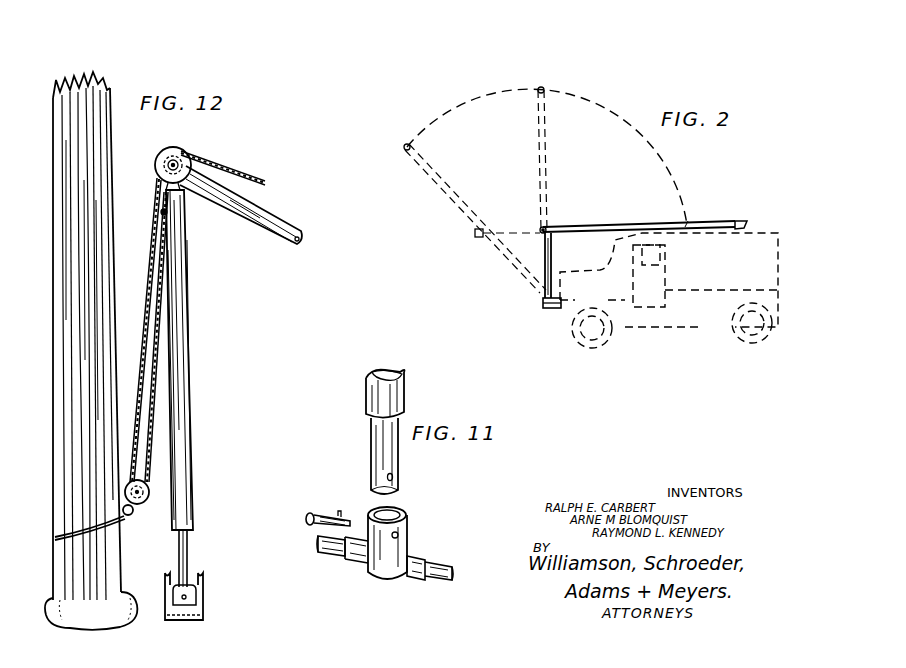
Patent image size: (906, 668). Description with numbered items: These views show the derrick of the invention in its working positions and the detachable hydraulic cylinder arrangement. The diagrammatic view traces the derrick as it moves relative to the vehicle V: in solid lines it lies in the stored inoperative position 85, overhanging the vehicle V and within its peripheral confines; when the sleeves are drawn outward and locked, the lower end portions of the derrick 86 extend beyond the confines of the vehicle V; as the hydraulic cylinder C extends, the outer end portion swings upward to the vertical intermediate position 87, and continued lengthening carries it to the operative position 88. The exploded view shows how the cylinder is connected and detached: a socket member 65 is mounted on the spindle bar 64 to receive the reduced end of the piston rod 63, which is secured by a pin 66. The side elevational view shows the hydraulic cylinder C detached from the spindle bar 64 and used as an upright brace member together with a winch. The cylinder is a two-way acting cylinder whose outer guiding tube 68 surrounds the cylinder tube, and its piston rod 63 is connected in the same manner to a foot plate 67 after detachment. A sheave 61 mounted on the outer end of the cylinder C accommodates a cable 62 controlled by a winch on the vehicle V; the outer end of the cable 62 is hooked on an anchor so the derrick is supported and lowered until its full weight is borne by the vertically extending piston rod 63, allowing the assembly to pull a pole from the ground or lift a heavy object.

In FIG. 12, the sheave 61 is at (157, 163).
In FIG. 12, the cable 62 is at (236, 176).
In FIG. 12, the outer guiding tube 68 is at (184, 316).
In FIG. 12, the hydraulic cylinder C is at (200, 450).
In FIG. 12, the piston rod 63 is at (188, 553).
In FIG. 11, the piston rod 63 is at (396, 396).
In FIG. 12, the foot plate 67 is at (196, 606).
In FIG. 11, the socket member 65 is at (406, 523).
In FIG. 11, the pin 66 is at (325, 515).
In FIG. 11, the spindle bar 64 is at (446, 576).
In FIG. 2, the intermediate position 87 is at (551, 150).
In FIG. 2, the operative position 88 is at (428, 162).
In FIG. 2, the lower end portions of the derrick 86 is at (490, 232).
In FIG. 2, the stored inoperative position 85 is at (714, 225).
In FIG. 2, the vehicle V is at (706, 290).